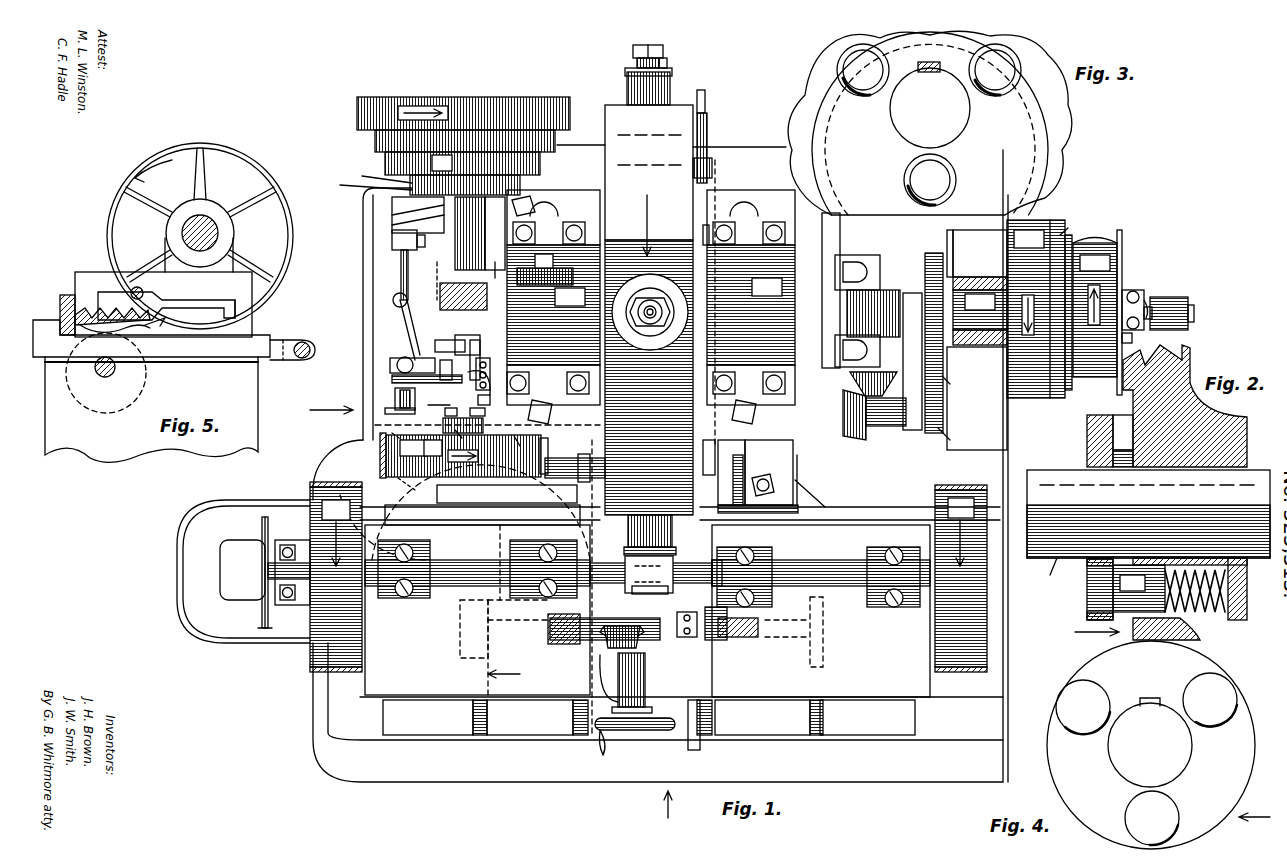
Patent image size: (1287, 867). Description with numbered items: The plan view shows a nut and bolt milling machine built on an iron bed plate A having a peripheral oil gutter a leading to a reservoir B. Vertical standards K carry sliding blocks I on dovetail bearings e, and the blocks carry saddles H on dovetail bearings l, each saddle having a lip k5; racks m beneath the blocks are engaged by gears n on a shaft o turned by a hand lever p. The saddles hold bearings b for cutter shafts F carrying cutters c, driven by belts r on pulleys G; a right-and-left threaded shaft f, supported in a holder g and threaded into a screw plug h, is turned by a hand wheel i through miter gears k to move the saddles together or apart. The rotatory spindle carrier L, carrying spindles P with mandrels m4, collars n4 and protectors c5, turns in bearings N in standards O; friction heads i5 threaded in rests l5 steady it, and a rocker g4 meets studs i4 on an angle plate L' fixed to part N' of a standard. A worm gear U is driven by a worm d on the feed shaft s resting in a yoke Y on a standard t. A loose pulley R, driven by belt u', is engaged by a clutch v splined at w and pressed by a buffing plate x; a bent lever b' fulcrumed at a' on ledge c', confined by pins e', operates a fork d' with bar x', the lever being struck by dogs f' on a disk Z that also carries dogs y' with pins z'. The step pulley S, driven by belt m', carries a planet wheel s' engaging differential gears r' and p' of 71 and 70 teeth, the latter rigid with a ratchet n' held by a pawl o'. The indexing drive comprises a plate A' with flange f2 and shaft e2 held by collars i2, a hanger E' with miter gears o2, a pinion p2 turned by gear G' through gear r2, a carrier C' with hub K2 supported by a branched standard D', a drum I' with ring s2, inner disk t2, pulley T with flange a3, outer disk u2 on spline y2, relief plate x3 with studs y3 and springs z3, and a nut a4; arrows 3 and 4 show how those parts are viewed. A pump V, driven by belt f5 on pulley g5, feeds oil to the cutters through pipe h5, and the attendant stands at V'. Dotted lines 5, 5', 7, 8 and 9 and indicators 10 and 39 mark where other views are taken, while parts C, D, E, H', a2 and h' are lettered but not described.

In FIG. 1, the peripheral gutter a is at (592, 463).
In FIG. 1, the reservoir B is at (451, 500).
In FIG. 1, the belt pulleys G is at (648, 577).
In FIG. 5, the belt pulleys G is at (188, 236).
In FIG. 1, the belts r is at (648, 581).
In FIG. 1, the belt f5 is at (262, 530).
In FIG. 1, the pulley g5 is at (262, 618).
In FIG. 1, the rotary pump V is at (289, 565).
In FIG. 1, the bed plate A is at (681, 593).
In FIG. 1, the circular plate A' is at (810, 480).
In FIG. 1, the saddles H is at (647, 611).
In FIG. 5, the saddles H is at (163, 304).
In FIG. 1, the cutter shafts F is at (470, 560).
In FIG. 5, the cutter shafts F is at (192, 216).
In FIG. 1, the bearings b is at (649, 563).
In FIG. 5, the bearings b is at (200, 215).
In FIG. 1, the gears n is at (650, 632).
In FIG. 5, the gears n is at (115, 338).
In FIG. 1, the dotted section line 5' is at (495, 610).
In FIG. 1, the standards K is at (649, 717).
In FIG. 5, the standards K is at (151, 409).
In FIG. 1, the dovetail bearings e is at (648, 717).
In FIG. 5, the dovetail bearings e is at (174, 330).
In FIG. 1, the spindle carrier L is at (649, 180).
In FIG. 1, the rocker g4 is at (708, 125).
In FIG. 1, the disk a2 is at (650, 275).
In FIG. 1, the screw plug h is at (691, 451).
In FIG. 1, the spindles P is at (627, 94).
In FIG. 1, the safety bands c5 is at (672, 73).
In FIG. 1, the collar n4 is at (637, 63).
In FIG. 1, the mandrels m4 is at (667, 62).
In FIG. 1, the cap h' is at (639, 44).
In FIG. 1, the attendant's station V' is at (711, 79).
In FIG. 1, the cutters c is at (650, 597).
In FIG. 1, the line 39 is at (730, 373).
In FIG. 1, the horizontal shaft o is at (604, 616).
In FIG. 5, the horizontal shaft o is at (106, 373).
In FIG. 1, the small shaft f is at (673, 608).
In FIG. 5, the small shaft f is at (131, 288).
In FIG. 1, the miter gears k is at (621, 637).
In FIG. 1, the holder g is at (585, 566).
In FIG. 5, the holder g is at (66, 296).
In FIG. 1, the hand wheel i is at (665, 732).
In FIG. 1, the hand lever p is at (700, 732).
In FIG. 1, the dotted section line 5 is at (628, 622).
In FIG. 1, the belt m' is at (449, 112).
In FIG. 1, the step pulley S is at (375, 135).
In FIG. 1, the planet wheel s' is at (462, 163).
In FIG. 1, the differential gear r' is at (473, 184).
In FIG. 1, the seventy-one teeth 71 is at (357, 173).
In FIG. 1, the seventy teeth 70 is at (358, 186).
In FIG. 1, the detent pawl o' is at (418, 215).
In FIG. 1, the ratchet n' is at (478, 233).
In FIG. 1, the column C is at (495, 233).
In FIG. 1, the yoke Y is at (492, 262).
In FIG. 1, the differential gear p' is at (521, 206).
In FIG. 1, the standards O is at (768, 200).
In FIG. 1, the bearings N is at (651, 305).
In FIG. 1, the standard t is at (545, 269).
In FIG. 1, the circular flange f2 is at (705, 225).
In FIG. 1, the adjustable dogs y' is at (396, 321).
In FIG. 1, the projecting pin z' is at (433, 329).
In FIG. 1, the disk Z is at (397, 275).
In FIG. 1, the dotted section line 7 is at (434, 281).
In FIG. 1, the adjustable peripheral dogs f' is at (391, 296).
In FIG. 1, the worm d is at (463, 288).
In FIG. 1, the bent lever b' is at (400, 330).
In FIG. 1, the spline w is at (442, 345).
In FIG. 1, the short bar x' is at (467, 355).
In FIG. 1, the lever D is at (410, 361).
In FIG. 1, the dotted section line 9 is at (458, 374).
In FIG. 1, the fulcrum a' is at (423, 374).
In FIG. 1, the vertical pins e' is at (485, 383).
In FIG. 1, the horizontal ledge c' is at (396, 396).
In FIG. 1, the buffing plate x is at (489, 400).
In FIG. 1, the fork d' is at (465, 407).
In FIG. 1, the clutch v is at (484, 424).
In FIG. 1, the dotted section line 8 is at (487, 428).
In FIG. 1, the arrow 10 is at (331, 416).
In FIG. 1, the belt u' is at (362, 452).
In FIG. 1, the belt pulley R is at (463, 456).
In FIG. 1, the worm gear U is at (486, 456).
In FIG. 1, the feed shaft s is at (455, 439).
In FIG. 1, the pipe h5 is at (409, 489).
In FIG. 1, the rests l5 is at (482, 505).
In FIG. 1, the friction heads i5 is at (560, 466).
In FIG. 1, the horizontal studs i4 is at (709, 457).
In FIG. 1, the angle plate L' is at (769, 472).
In FIG. 1, the horizontally-extended part N' is at (777, 476).
In FIG. 1, the hanger E' is at (851, 290).
In FIG. 1, the shaft e2 is at (906, 304).
In FIG. 1, the driving gear G' is at (922, 331).
In FIG. 1, the carrier C' is at (938, 330).
In FIG. 1, the block E is at (980, 253).
In FIG. 1, the hub K2 is at (980, 311).
In FIG. 1, the branched standard D' is at (1070, 354).
In FIG. 1, the intermediate gear r2 is at (949, 380).
In FIG. 1, the miter gears o2 is at (890, 386).
In FIG. 1, the shaft H' is at (889, 423).
In FIG. 1, the spur pinion p2 is at (946, 438).
In FIG. 1, the hollow drum I' is at (1036, 309).
In FIG. 1, the removable ring s2 is at (1067, 222).
In FIG. 1, the inner friction disk t2 is at (1078, 307).
In FIG. 1, the friction belt pulley T is at (1095, 308).
In FIG. 1, the outer flange a3 is at (1120, 234).
In FIG. 1, the nut a4 is at (1136, 303).
In FIG. 1, the jam nuts i2 is at (1143, 297).
In FIG. 2, the jam nuts i2 is at (1046, 574).
In FIG. 1, the outer friction disk u2 is at (1127, 343).
In FIG. 2, the outer friction disk u2 is at (1175, 350).
In FIG. 3, the outer friction disk u2 is at (930, 123).
In FIG. 2, the spline y2 is at (1063, 480).
In FIG. 3, the spline y2 is at (929, 57).
In FIG. 2, the relief plate x3 is at (1088, 418).
In FIG. 4, the relief plate x3 is at (1158, 745).
In FIG. 2, the arrow 4 is at (1123, 428).
In FIG. 2, the longitudinal studs y3 is at (1139, 521).
In FIG. 4, the longitudinal studs y3 is at (1146, 759).
In FIG. 2, the springs z3 is at (1210, 615).
In FIG. 3, the springs z3 is at (857, 91).
In FIG. 2, the arrow 3 is at (1097, 638).
In FIG. 5, the sliding blocks I is at (166, 307).
In FIG. 5, the dovetail bearings l is at (155, 327).
In FIG. 5, the horizontal lip k5 is at (240, 312).
In FIG. 5, the racks m is at (112, 311).